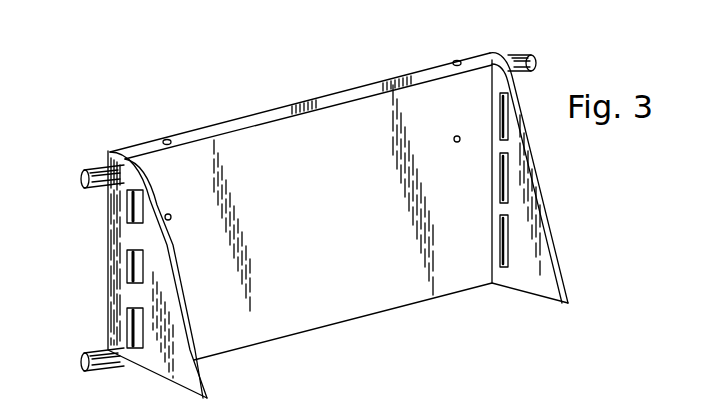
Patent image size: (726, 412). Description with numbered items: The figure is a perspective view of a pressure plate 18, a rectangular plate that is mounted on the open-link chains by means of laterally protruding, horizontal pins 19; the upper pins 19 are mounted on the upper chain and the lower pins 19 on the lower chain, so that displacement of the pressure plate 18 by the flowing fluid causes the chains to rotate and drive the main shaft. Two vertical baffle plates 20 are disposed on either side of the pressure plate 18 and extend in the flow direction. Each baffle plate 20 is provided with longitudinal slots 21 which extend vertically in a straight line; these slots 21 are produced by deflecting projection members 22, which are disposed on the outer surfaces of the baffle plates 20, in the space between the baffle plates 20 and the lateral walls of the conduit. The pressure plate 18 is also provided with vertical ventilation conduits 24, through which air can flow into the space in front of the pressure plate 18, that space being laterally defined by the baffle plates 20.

The pressure plate 18 is at (308, 135).
The pins 19 is at (100, 170).
The baffle plates 20 is at (183, 371).
The longitudinal slots 21 is at (143, 318).
The projection members 22 is at (128, 257).
The ventilation conduits 24 is at (167, 138).